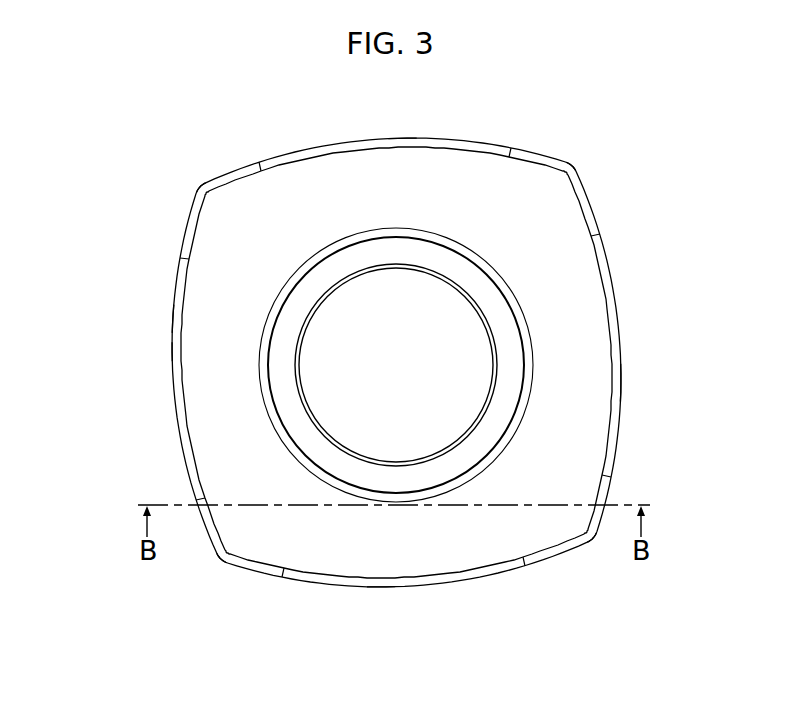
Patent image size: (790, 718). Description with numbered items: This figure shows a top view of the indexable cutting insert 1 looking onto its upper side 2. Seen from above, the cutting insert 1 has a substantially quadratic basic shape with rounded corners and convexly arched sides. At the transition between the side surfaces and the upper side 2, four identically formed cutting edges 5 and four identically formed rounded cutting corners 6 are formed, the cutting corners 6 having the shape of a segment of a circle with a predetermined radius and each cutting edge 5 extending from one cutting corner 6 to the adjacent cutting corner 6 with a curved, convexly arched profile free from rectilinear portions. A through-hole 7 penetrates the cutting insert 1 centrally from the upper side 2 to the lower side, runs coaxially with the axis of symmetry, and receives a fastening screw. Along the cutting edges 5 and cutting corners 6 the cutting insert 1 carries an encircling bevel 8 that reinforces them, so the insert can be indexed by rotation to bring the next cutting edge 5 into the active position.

The indexable cutting insert 1 is at (118, 205).
The upper side 2 is at (545, 235).
The cutting edge 5 is at (400, 140).
The cutting corner 6 is at (197, 188).
The through-hole 7 is at (404, 343).
The bevel 8 is at (172, 322).